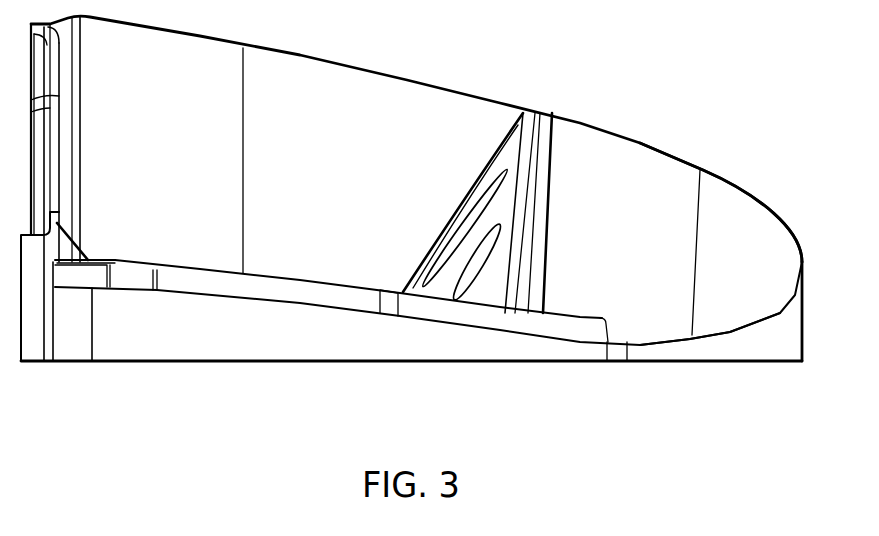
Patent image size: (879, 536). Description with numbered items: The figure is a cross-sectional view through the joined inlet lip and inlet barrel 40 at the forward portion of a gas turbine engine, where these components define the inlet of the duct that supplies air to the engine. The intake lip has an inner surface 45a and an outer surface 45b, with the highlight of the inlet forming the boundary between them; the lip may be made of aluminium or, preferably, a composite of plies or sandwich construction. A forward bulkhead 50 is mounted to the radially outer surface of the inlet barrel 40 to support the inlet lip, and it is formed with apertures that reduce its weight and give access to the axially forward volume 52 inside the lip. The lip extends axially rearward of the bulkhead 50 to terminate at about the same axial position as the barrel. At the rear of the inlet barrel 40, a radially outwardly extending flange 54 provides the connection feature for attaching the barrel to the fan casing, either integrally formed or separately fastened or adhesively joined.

The inlet barrel 40 is at (303, 297).
The forward bulkhead 50 is at (535, 150).
The axially forward volume 52 is at (652, 249).
The radially outwardly extending flange 54 is at (68, 258).
The inner surface 45a is at (710, 340).
The outer surface 45b is at (760, 202).